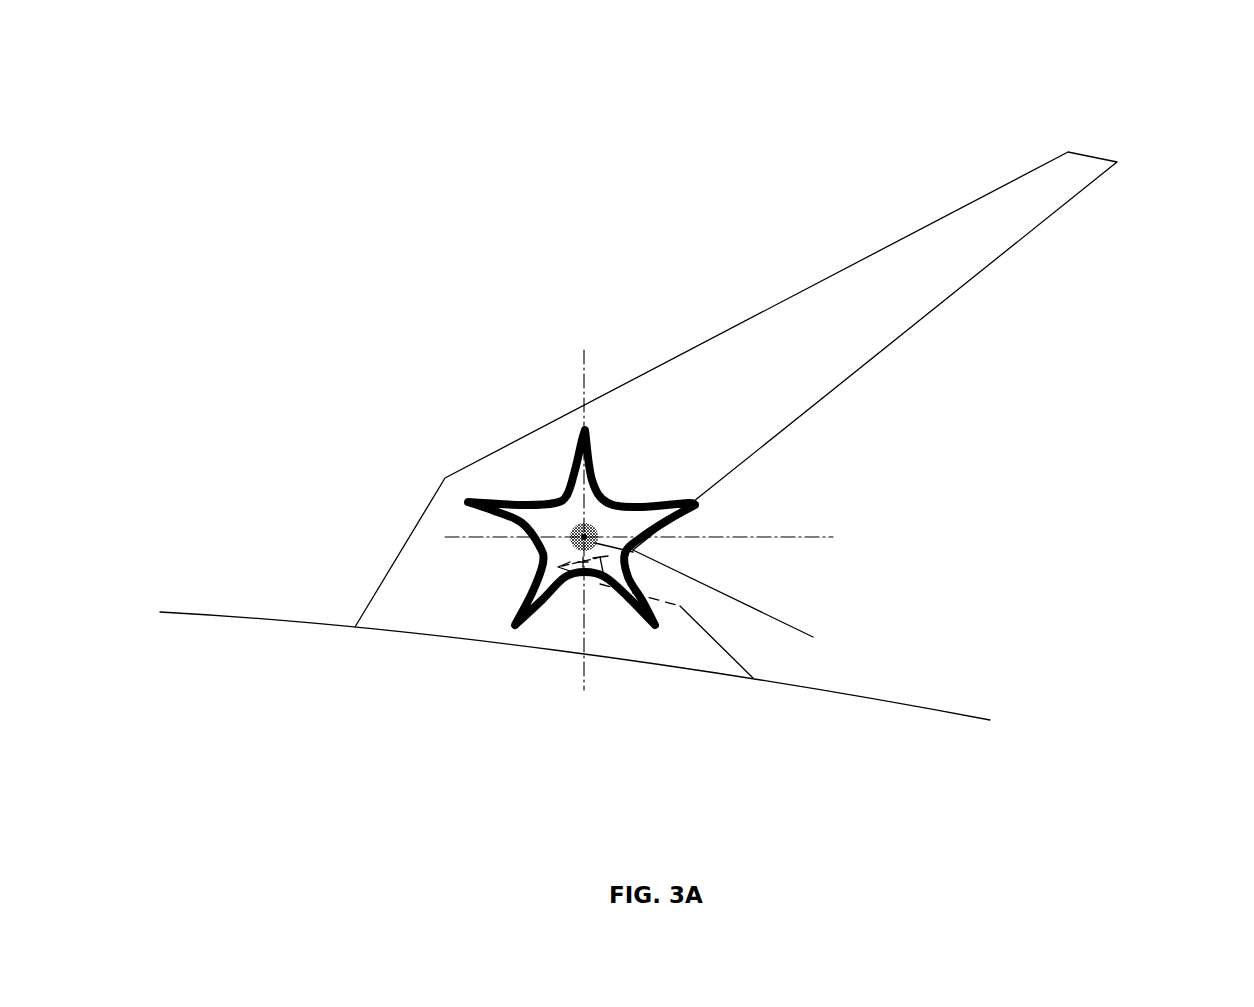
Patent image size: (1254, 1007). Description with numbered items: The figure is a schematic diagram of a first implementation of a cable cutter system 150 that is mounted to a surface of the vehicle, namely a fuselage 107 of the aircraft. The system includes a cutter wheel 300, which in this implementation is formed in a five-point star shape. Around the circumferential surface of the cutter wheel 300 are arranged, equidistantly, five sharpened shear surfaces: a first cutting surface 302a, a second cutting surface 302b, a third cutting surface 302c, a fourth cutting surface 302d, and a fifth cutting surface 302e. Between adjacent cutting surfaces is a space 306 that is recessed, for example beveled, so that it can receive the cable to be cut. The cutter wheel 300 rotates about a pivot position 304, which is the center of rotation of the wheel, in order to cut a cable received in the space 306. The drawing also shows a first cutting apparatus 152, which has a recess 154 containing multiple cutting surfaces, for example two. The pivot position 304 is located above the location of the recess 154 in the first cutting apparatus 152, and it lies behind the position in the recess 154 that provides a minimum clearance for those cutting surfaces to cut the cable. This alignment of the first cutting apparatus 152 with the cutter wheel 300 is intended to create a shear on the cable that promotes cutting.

The fuselage 107 is at (213, 617).
The cable cutter system 150 is at (803, 376).
The first cutting apparatus 152 is at (1073, 198).
The recess 154 is at (633, 550).
The cutter wheel 300 is at (545, 520).
The first cutting surface 302a is at (590, 428).
The second cutting surface 302b is at (676, 503).
The third cutting surface 302c is at (656, 628).
The fourth cutting surface 302d is at (512, 613).
The fifth cutting surface 302e is at (462, 503).
The pivot position 304 is at (813, 637).
The space 306 is at (601, 562).